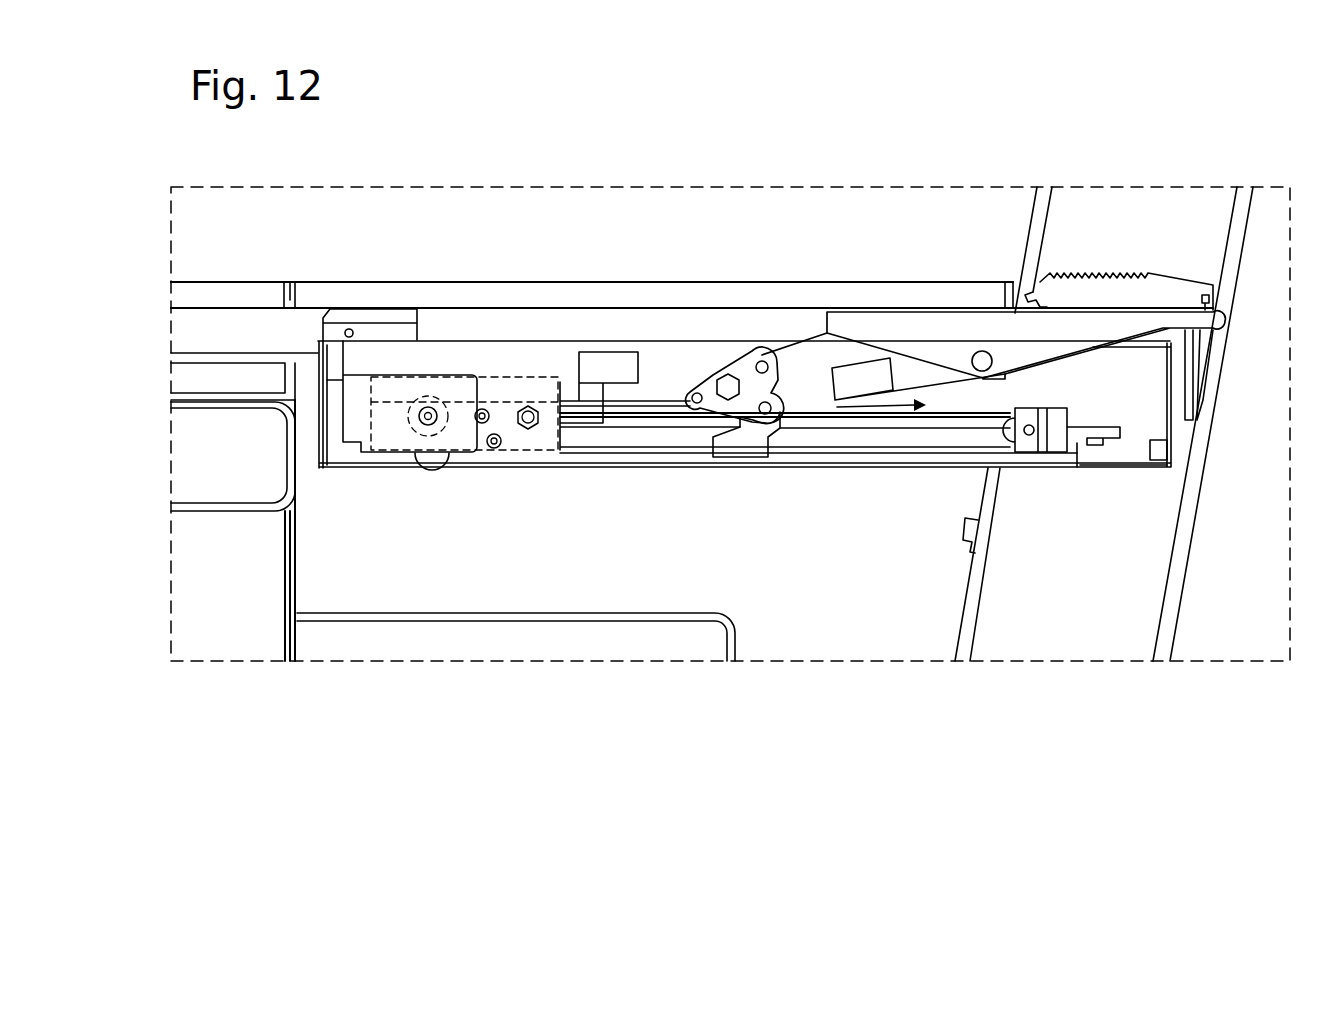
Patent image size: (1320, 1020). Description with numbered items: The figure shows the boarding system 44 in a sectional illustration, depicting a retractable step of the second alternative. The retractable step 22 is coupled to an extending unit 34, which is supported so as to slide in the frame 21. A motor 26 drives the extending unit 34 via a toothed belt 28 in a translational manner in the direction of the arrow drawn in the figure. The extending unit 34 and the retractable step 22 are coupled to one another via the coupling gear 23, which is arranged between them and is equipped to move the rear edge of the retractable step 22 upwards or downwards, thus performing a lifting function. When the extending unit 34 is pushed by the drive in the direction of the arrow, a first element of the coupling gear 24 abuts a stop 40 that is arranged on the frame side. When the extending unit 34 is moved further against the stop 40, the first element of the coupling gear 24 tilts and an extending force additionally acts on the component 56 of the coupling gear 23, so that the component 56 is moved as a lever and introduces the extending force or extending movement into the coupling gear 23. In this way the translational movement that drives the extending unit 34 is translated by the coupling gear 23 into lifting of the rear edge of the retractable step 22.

The boarding system 44 is at (816, 228).
The retractable step 22 is at (912, 335).
The coupling gear 23 is at (712, 352).
The component of the coupling gear 56 is at (692, 388).
The first element of the coupling gear 24 is at (748, 437).
The toothed belt 28 is at (647, 402).
The frame 21 is at (543, 463).
The motor 26 is at (436, 437).
The extending unit 34 is at (912, 372).
The stop 40 is at (1156, 452).